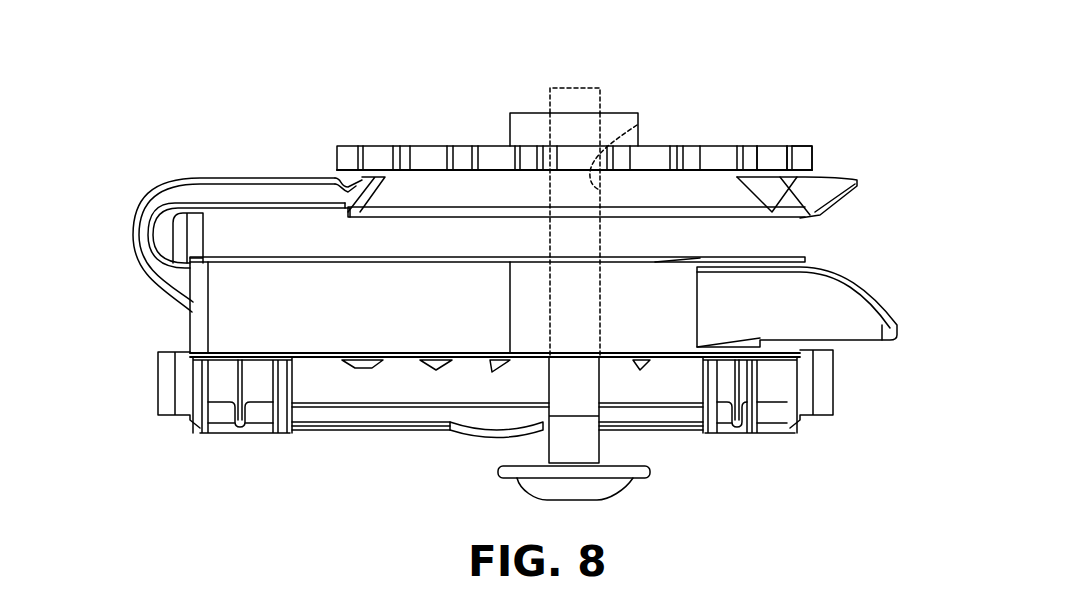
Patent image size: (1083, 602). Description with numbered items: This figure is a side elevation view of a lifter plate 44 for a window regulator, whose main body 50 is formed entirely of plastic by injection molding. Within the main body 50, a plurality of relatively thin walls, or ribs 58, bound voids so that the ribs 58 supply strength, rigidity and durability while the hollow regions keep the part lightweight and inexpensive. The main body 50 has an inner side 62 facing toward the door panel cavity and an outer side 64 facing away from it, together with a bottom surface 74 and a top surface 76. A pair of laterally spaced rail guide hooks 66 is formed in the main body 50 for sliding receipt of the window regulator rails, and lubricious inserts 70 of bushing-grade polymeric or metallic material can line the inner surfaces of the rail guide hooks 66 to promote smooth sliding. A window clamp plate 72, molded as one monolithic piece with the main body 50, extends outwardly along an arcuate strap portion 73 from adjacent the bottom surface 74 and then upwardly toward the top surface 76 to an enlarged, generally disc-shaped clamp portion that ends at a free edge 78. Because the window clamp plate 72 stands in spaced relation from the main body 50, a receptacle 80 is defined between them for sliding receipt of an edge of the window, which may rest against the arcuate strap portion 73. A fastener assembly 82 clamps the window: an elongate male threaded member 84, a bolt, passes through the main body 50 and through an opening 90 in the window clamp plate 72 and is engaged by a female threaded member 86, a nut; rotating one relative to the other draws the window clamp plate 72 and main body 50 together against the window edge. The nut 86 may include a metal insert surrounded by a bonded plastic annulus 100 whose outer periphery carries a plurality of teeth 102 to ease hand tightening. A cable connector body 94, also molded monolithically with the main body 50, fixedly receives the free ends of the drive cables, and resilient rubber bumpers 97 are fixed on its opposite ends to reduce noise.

The lifter plate 44 is at (908, 192).
The main body 50 is at (178, 335).
The ribs 58 is at (393, 397).
The inner side 62 is at (320, 432).
The outer side 64 is at (806, 259).
The rail guide hooks 66 is at (187, 427).
The lubricious inserts 70 is at (688, 407).
The window clamp plate 72 is at (687, 183).
The arcuate strap portion 73 is at (140, 205).
The bottom surface 74 is at (187, 320).
The top surface 76 is at (850, 355).
The free edge 78 is at (858, 180).
The receptacle 80 is at (810, 237).
The fastener assembly 82 is at (538, 92).
The elongate male threaded member 84 is at (549, 443).
The female threaded member 86 is at (608, 113).
The opening 90 is at (637, 125).
The cable connector body 94 is at (209, 447).
The resilient bumpers 97 is at (157, 377).
The plastic annulus 100 is at (767, 146).
The teeth 102 is at (815, 158).